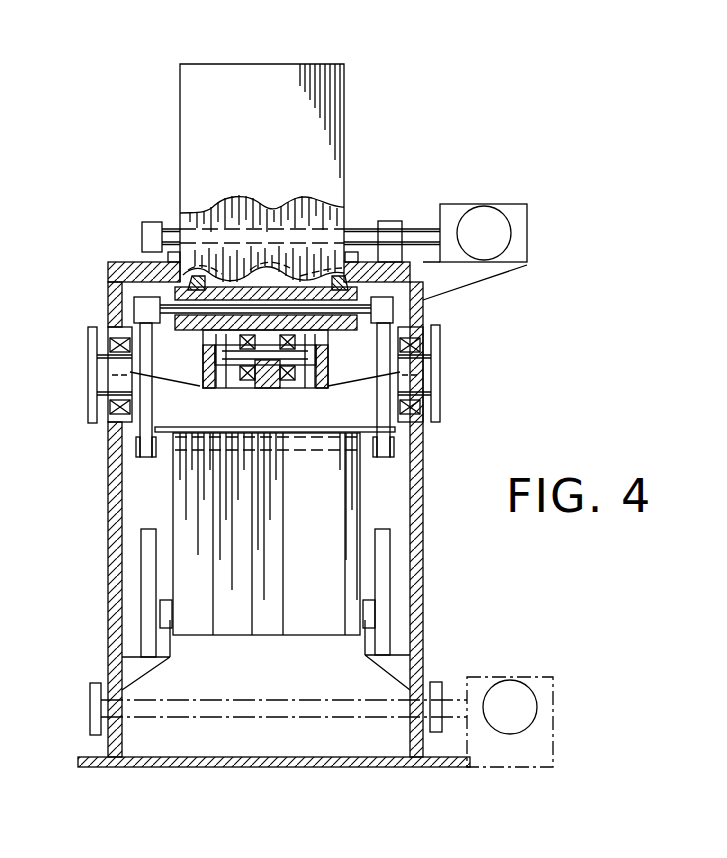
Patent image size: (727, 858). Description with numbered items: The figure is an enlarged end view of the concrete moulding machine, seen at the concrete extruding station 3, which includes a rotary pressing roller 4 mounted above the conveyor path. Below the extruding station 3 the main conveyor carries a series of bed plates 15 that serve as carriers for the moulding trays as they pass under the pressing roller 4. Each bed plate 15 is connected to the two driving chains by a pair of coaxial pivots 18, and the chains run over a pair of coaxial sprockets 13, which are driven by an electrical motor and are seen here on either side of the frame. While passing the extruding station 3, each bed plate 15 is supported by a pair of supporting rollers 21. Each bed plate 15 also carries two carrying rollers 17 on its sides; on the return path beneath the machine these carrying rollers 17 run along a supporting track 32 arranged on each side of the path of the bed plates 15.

The concrete extruding station 3 is at (265, 66).
The rotary pressing roller 4 is at (217, 198).
The coaxial sprockets 13 is at (145, 390).
The bed plate 15 is at (180, 290).
The carrying rollers 17 is at (163, 612).
The coaxial pivots 18 is at (165, 450).
The supporting rollers 21 is at (221, 372).
The supporting track 32 is at (140, 573).